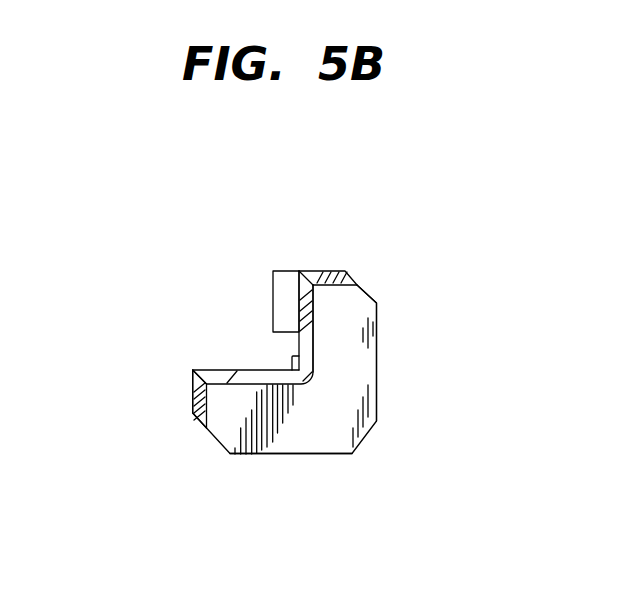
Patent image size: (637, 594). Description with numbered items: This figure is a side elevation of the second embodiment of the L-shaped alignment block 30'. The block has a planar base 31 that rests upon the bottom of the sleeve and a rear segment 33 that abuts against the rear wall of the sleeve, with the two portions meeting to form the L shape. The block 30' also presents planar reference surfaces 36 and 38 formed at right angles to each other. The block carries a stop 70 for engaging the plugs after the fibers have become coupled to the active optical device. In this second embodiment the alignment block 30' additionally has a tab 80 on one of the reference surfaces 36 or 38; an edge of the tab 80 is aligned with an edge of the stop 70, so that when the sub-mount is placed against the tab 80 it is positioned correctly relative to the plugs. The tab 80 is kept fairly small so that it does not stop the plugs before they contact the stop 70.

The alignment block 30' is at (348, 311).
The planar base 31 is at (305, 455).
The rear segment 33 is at (377, 367).
The reference surface 36 is at (194, 370).
The reference surface 38 is at (300, 345).
The stop 70 is at (290, 282).
The tab 80 is at (291, 363).